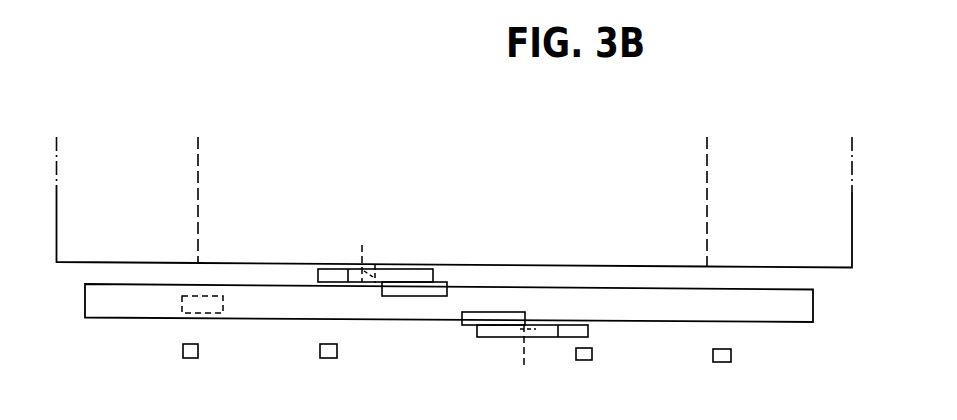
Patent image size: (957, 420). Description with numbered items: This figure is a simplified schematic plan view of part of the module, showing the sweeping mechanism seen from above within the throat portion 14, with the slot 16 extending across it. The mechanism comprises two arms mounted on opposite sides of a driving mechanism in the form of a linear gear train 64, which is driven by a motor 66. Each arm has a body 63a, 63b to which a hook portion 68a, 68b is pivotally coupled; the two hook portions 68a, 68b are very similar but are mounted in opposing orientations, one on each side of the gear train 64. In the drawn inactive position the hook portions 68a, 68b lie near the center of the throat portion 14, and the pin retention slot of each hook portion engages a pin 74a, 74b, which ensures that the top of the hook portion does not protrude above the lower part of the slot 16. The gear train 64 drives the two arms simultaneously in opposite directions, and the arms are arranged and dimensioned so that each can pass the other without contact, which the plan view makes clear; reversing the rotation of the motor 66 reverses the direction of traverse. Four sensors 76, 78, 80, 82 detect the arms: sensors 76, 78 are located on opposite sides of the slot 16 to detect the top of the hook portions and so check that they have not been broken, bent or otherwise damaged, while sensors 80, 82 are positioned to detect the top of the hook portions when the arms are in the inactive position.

The throat portion 14 is at (57, 170).
The slot 16 is at (707, 176).
The body 63a is at (445, 282).
The body 63b is at (462, 325).
The linear gear train 64 is at (671, 322).
The motor 66 is at (223, 310).
The hook portion 68a is at (402, 269).
The hook portion 68b is at (477, 334).
The pin 74a is at (359, 242).
The pin 74b is at (523, 362).
The sensor 76 is at (191, 358).
The sensor 78 is at (724, 362).
The sensor 80 is at (329, 358).
The sensor 82 is at (587, 360).